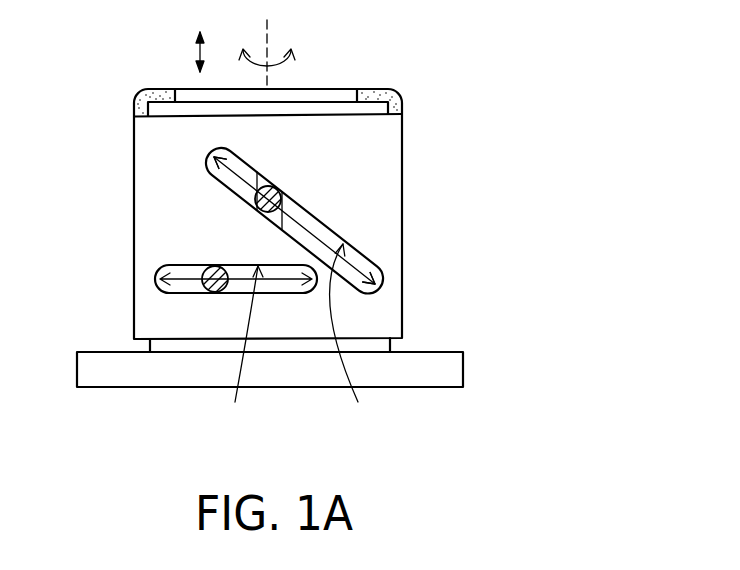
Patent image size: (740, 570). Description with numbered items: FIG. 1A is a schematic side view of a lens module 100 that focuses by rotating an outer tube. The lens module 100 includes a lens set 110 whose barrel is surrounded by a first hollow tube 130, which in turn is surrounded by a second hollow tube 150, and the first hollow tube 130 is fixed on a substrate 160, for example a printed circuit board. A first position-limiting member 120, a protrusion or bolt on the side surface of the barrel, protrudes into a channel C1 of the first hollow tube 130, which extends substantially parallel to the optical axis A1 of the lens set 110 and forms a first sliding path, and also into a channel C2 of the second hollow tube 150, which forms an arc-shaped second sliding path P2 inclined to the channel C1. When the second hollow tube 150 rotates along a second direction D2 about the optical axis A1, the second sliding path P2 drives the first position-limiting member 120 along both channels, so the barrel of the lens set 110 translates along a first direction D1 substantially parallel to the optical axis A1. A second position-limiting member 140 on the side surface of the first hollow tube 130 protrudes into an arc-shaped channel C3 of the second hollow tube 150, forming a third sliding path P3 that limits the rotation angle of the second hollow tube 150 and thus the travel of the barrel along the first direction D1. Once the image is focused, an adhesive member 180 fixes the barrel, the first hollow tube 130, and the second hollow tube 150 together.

The lens module 100 is at (550, 465).
The lens set 110 is at (352, 92).
The first position-limiting member 120 is at (282, 184).
The first hollow tube 130 is at (378, 107).
The second position-limiting member 140 is at (207, 265).
The second hollow tube 150 is at (373, 212).
The substrate 160 is at (445, 367).
The adhesive member 180 is at (133, 91).
The optical axis A1 is at (268, 33).
The first direction D1 is at (196, 54).
The second direction D2 is at (288, 58).
The channel C1 is at (273, 220).
The channel C2 is at (352, 341).
The channel C3 is at (242, 352).
The second sliding path P2 is at (362, 255).
The third sliding path P3 is at (192, 293).